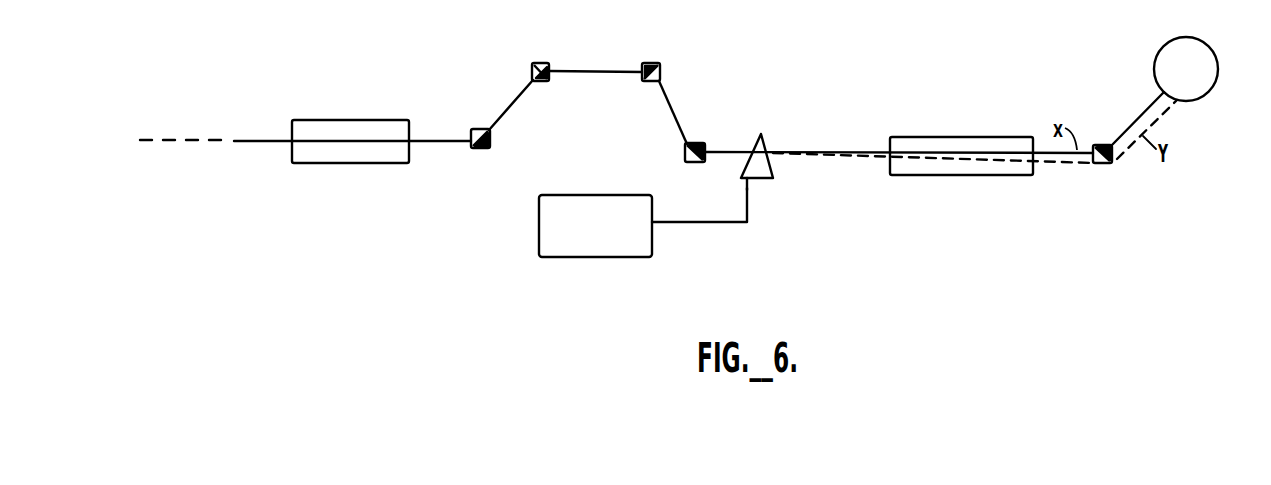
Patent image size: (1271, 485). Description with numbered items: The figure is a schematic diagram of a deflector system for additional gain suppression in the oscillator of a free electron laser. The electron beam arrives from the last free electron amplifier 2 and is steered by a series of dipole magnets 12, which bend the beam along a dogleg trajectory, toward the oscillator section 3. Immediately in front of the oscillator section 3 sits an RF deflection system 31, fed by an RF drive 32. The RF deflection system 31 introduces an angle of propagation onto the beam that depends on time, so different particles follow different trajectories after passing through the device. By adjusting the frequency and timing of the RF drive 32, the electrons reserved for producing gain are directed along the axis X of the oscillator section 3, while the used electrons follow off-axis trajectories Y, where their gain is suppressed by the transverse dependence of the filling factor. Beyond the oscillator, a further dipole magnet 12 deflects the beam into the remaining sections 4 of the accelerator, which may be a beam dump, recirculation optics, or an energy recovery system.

The free electron amplifier 2 is at (392, 120).
The dipole magnets 12 is at (476, 129).
The RF deflection system 31 is at (764, 178).
The RF drive 32 is at (618, 195).
The oscillator section 3 is at (1003, 137).
The remaining sections of the accelerator 4 is at (1219, 70).